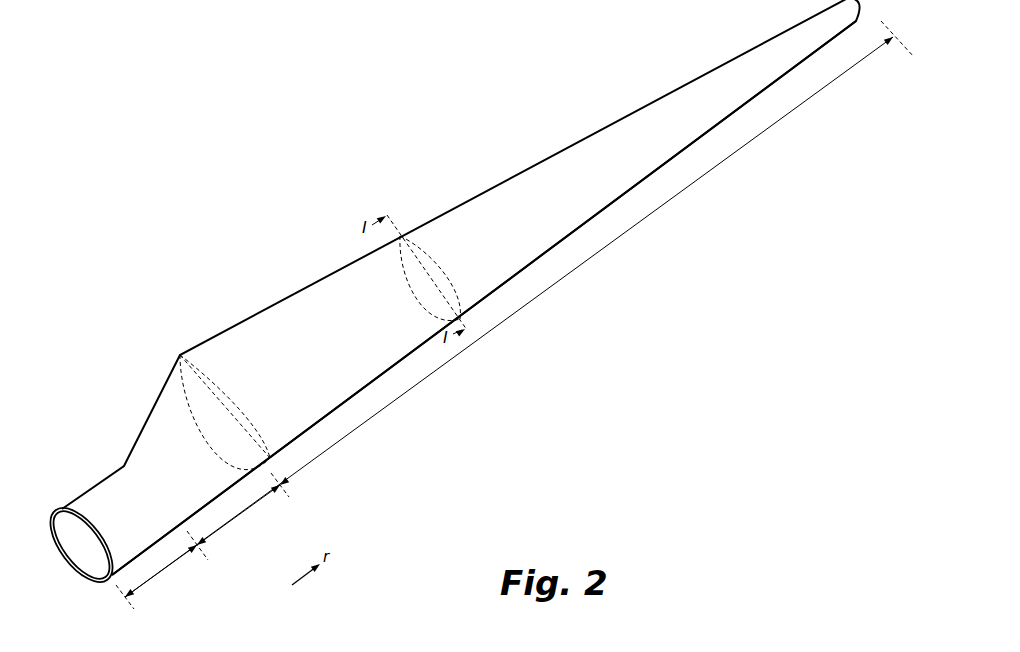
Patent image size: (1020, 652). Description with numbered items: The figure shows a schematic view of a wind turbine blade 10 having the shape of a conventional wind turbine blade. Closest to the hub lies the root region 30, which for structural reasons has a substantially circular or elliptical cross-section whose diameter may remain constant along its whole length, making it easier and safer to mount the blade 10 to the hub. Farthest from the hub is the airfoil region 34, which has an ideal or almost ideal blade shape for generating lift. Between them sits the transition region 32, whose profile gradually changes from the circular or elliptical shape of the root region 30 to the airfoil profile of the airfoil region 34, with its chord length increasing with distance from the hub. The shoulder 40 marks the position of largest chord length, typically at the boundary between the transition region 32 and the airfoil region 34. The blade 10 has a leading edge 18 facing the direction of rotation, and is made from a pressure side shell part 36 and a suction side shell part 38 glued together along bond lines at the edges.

The wind turbine blade 10 is at (312, 180).
The leading edge 18 is at (615, 202).
The root region 30 is at (163, 571).
The transition region 32 is at (242, 515).
The airfoil region 34 is at (527, 305).
The pressure side shell part 36 is at (78, 510).
The suction side shell part 38 is at (52, 518).
The shoulder 40 is at (178, 350).